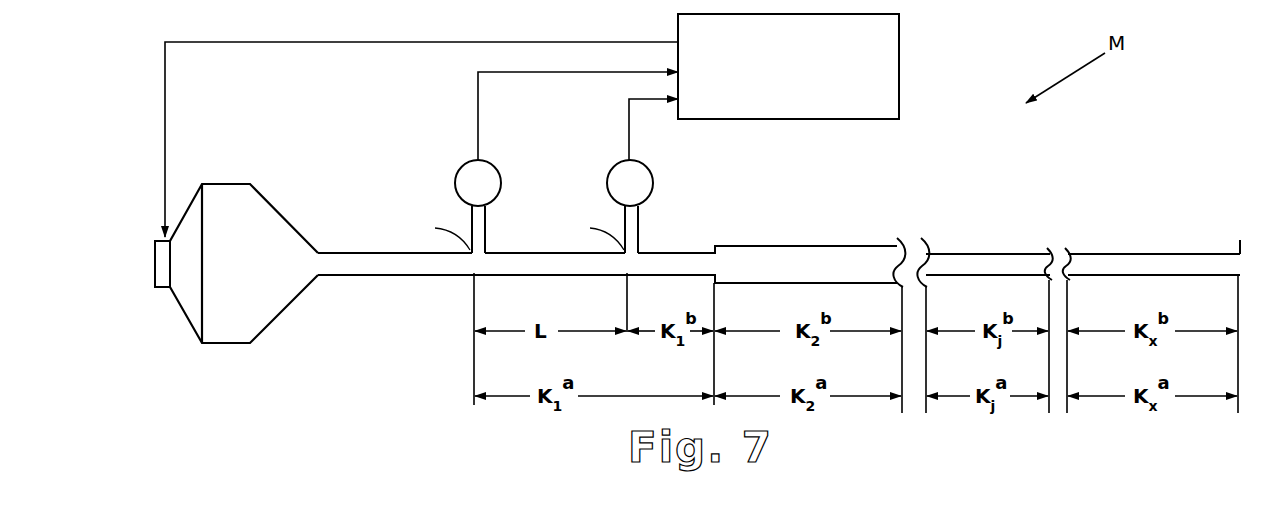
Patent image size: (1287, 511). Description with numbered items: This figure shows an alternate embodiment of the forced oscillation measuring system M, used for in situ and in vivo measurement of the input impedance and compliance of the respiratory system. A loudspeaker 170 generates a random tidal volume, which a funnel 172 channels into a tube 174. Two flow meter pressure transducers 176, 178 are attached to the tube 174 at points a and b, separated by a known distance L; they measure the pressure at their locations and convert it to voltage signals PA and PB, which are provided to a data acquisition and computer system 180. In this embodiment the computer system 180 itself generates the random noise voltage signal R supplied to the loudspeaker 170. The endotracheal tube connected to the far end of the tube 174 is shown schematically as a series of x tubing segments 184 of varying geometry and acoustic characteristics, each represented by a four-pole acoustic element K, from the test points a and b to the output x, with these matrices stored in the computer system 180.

The loudspeaker 170 is at (177, 300).
The funnel 172 is at (285, 222).
The tube 174 is at (413, 276).
The flow meter pressure transducer 176 is at (454, 186).
The flow meter pressure transducer 178 is at (603, 186).
The data acquisition and computer system 180 is at (901, 78).
The segments of tubing 184 is at (934, 233).